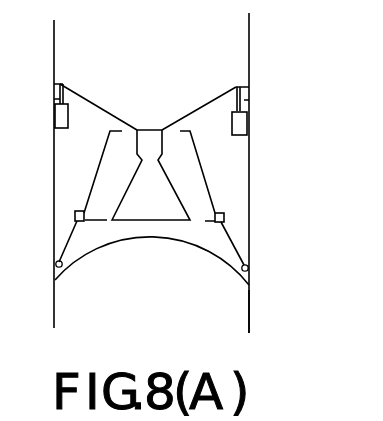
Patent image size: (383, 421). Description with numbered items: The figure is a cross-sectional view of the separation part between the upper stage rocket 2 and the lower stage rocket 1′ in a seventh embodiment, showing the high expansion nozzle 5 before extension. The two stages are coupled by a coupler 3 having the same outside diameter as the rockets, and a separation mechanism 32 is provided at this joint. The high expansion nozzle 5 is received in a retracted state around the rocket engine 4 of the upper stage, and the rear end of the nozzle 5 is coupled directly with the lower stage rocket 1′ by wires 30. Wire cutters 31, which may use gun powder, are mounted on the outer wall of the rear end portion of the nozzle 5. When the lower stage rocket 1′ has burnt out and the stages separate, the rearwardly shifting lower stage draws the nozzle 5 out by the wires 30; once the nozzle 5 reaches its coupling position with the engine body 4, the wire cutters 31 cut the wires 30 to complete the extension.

The upper stage rocket 2 is at (240, 44).
The lower stage rocket 1′ is at (237, 318).
The coupler 3 is at (246, 98).
The separation mechanism 32 is at (243, 124).
The rocket engine 4 is at (151, 212).
The high expansion nozzle 5 is at (212, 195).
The wire cutter 31 is at (225, 218).
The wires 30 is at (238, 252).